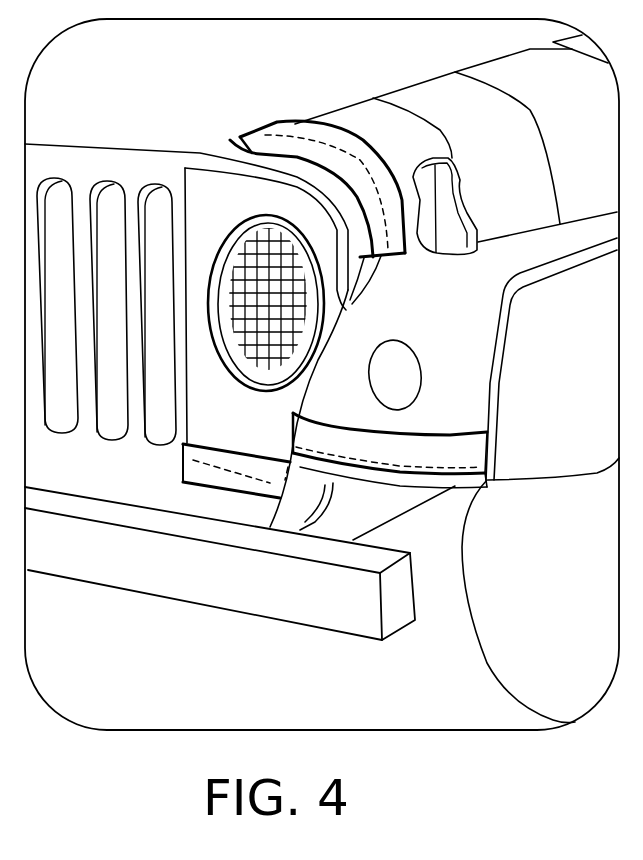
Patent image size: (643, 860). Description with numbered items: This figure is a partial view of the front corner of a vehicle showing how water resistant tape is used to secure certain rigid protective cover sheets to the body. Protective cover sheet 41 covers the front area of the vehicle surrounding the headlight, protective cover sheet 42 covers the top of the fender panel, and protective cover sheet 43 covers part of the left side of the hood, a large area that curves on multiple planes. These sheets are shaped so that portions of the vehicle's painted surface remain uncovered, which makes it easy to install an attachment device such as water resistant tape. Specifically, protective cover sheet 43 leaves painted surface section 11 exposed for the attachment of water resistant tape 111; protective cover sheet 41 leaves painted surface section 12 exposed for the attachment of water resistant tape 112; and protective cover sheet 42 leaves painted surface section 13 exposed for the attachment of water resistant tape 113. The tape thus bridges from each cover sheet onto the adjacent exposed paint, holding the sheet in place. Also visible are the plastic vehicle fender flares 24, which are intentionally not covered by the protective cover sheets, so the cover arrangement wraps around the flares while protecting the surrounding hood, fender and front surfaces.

The painted surface section 11 is at (253, 152).
The painted surface section 12 is at (232, 508).
The painted surface section 13 is at (447, 485).
The plastic vehicle fender flares 24 is at (591, 417).
The protective cover sheet 41 is at (212, 410).
The protective cover sheet 42 is at (450, 392).
The protective cover sheet 43 is at (365, 117).
The water resistant tape 111 is at (267, 118).
The water resistant tape 112 is at (180, 462).
The water resistant tape 113 is at (487, 448).